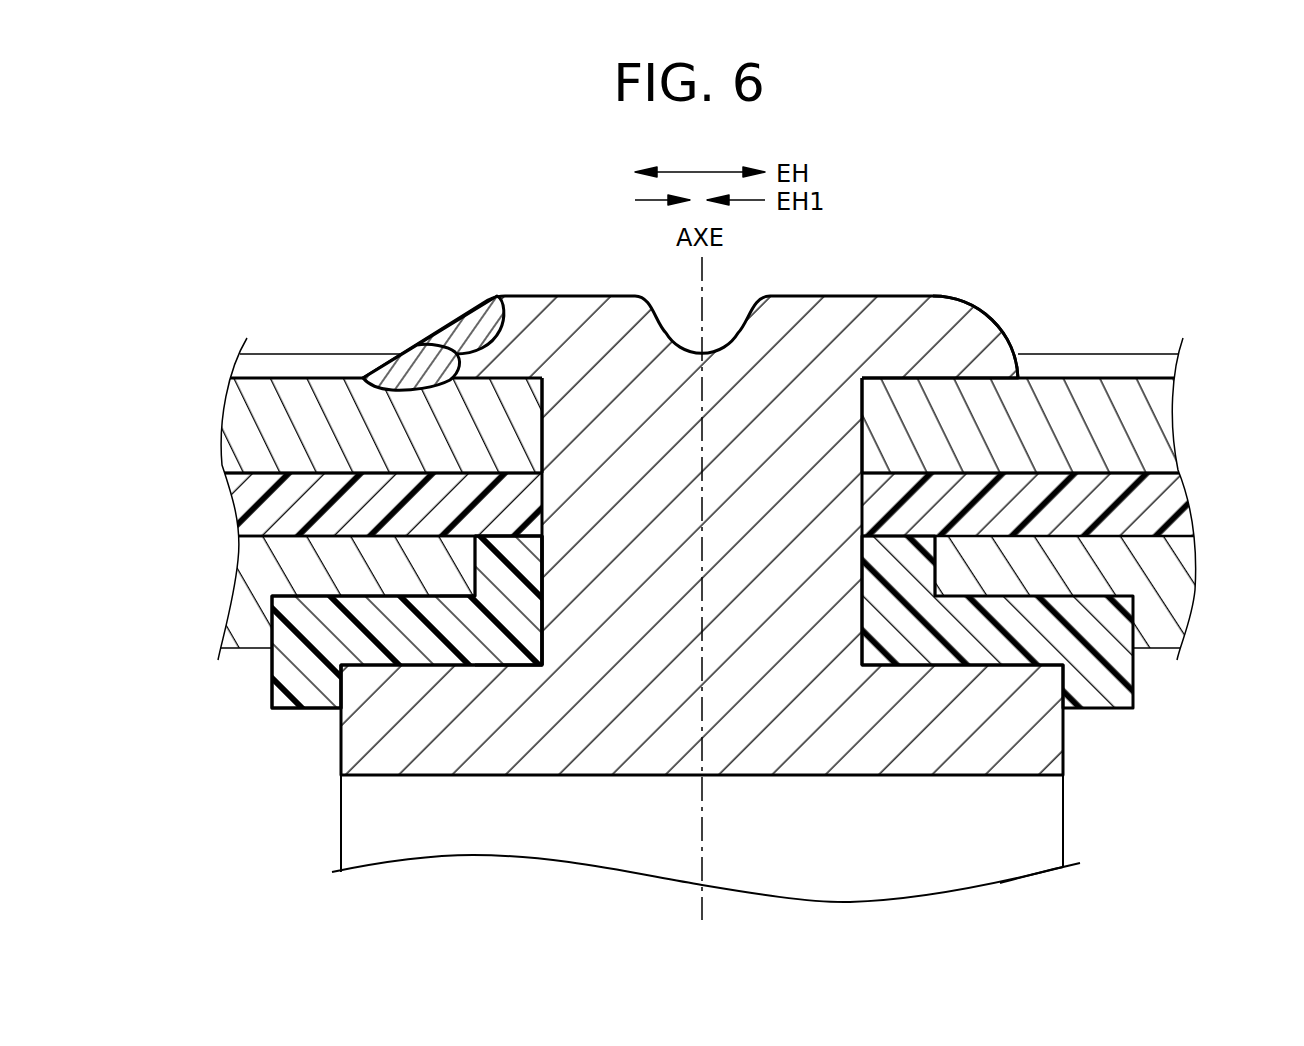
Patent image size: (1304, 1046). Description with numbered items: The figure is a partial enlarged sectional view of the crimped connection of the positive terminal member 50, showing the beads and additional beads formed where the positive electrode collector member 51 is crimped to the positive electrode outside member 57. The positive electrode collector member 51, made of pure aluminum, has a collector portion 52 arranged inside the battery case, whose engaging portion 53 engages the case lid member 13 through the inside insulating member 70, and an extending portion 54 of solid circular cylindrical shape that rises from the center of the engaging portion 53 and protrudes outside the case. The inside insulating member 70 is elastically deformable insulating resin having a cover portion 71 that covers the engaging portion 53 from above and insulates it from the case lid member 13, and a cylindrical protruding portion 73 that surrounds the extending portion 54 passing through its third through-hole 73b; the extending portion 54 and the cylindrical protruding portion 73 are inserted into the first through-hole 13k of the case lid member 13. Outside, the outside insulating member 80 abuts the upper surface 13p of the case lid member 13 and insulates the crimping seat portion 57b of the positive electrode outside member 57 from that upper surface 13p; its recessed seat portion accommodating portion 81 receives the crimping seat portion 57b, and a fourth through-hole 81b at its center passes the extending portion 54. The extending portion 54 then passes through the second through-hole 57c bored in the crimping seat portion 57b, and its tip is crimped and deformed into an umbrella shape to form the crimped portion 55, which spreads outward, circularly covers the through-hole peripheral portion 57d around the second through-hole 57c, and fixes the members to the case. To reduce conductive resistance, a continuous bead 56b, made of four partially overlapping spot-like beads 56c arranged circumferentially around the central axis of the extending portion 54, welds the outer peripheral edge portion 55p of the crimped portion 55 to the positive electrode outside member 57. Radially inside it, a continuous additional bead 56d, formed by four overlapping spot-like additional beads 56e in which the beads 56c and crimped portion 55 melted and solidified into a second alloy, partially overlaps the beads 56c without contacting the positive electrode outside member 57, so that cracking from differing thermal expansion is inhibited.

The case lid member 13 is at (265, 560).
The upper surface 13p is at (258, 538).
The first through-hole 13k is at (508, 588).
The positive terminal member 50 is at (755, 551).
The positive electrode collector member 51 is at (1035, 788).
The collector portion 52 is at (1015, 819).
The engaging portion 53 is at (877, 705).
The extending portion 54 is at (762, 600).
The crimped portion 55 is at (933, 323).
The outer peripheral edge portion 55p is at (973, 327).
The continuous bead 56b is at (400, 296).
The spot-like beads 56c is at (383, 368).
The continuous additional bead 56d is at (460, 278).
The spot-like additional beads 56e is at (457, 322).
The positive electrode outside member 57 is at (755, 338).
The crimping seat portion 57b is at (290, 413).
The second through-hole 57c is at (860, 408).
The through-hole peripheral portion 57d is at (503, 413).
The inside insulating member 70 is at (104, 644).
The cover portion 71 is at (345, 635).
The cylindrical protruding portion 73 is at (510, 588).
The third through-hole 73b is at (548, 615).
The outside insulating member 80 is at (648, 418).
The seat portion accommodating portion 81 is at (253, 502).
The fourth through-hole 81b is at (862, 510).